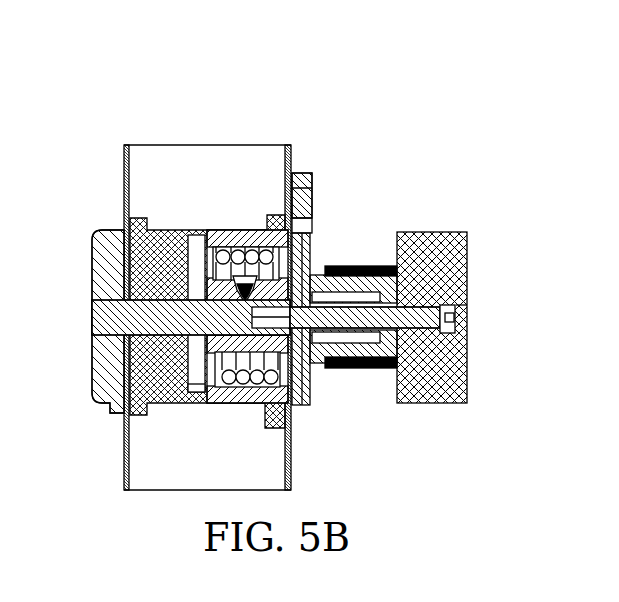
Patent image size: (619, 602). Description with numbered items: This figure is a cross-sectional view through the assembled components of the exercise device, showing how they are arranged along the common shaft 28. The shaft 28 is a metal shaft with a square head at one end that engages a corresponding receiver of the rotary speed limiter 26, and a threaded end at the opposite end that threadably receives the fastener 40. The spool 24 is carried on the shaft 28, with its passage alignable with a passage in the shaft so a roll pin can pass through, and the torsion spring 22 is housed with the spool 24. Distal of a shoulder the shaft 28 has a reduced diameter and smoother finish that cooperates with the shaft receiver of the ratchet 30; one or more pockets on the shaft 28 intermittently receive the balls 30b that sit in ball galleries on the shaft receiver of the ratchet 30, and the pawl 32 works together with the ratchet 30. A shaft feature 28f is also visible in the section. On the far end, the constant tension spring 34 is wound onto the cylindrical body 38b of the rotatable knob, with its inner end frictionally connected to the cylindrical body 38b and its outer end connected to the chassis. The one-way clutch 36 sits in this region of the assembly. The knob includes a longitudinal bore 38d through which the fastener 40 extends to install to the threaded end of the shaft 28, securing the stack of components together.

The torsion spring 22 is at (243, 240).
The spool 24 is at (163, 390).
The rotary speed limiter 26 is at (92, 273).
The shaft 28 is at (92, 320).
The shaft flange 28f is at (188, 388).
The ratchet 30 is at (303, 387).
The balls 30b is at (190, 235).
The pawl 32 is at (312, 193).
The constant tension spring 34 is at (352, 372).
The one-way clutch 36 is at (368, 267).
The cylindrical body 38b is at (321, 277).
The longitudinal bore 38d is at (463, 310).
The fastener 40 is at (455, 313).